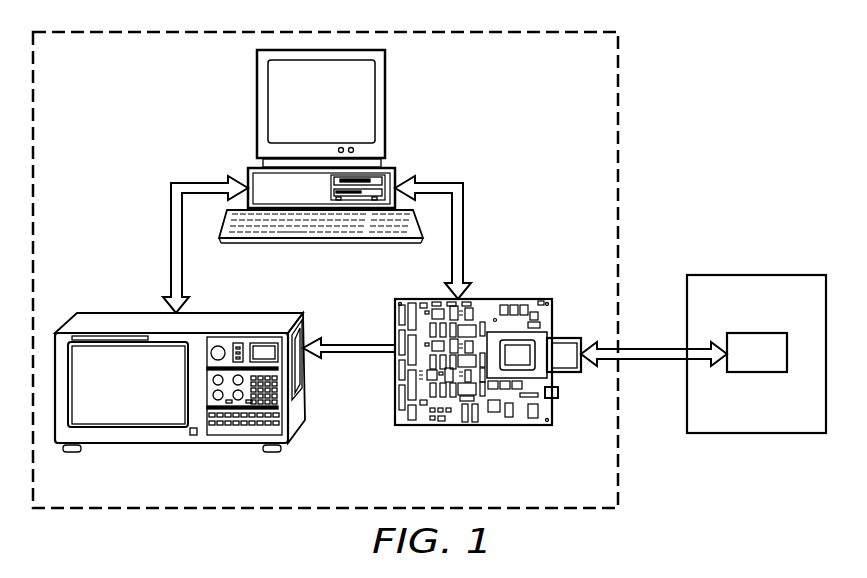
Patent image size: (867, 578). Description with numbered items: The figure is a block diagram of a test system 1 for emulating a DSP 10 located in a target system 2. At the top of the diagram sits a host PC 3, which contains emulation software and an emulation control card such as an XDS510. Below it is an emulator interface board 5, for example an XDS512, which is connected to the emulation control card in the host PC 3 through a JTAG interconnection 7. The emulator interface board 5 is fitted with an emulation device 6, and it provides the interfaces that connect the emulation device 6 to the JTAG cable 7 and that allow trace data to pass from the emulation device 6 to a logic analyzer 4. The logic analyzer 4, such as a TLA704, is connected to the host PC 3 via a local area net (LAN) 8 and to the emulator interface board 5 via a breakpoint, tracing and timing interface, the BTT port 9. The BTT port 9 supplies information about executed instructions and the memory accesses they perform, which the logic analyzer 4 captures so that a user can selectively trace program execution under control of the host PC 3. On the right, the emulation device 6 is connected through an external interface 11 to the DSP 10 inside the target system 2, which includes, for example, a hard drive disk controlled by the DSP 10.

The test system 1 is at (104, 80).
The target system 2 is at (757, 433).
The host PC 3 is at (257, 106).
The logic analyzer 4 is at (146, 322).
The emulator interface board 5 is at (473, 425).
The emulation device 6 is at (512, 350).
The JTAG interconnection 7 is at (463, 194).
The local area net (LAN) 8 is at (203, 183).
The BTT port 9 is at (360, 360).
The DSP 10 is at (757, 333).
The external interface 11 is at (651, 366).